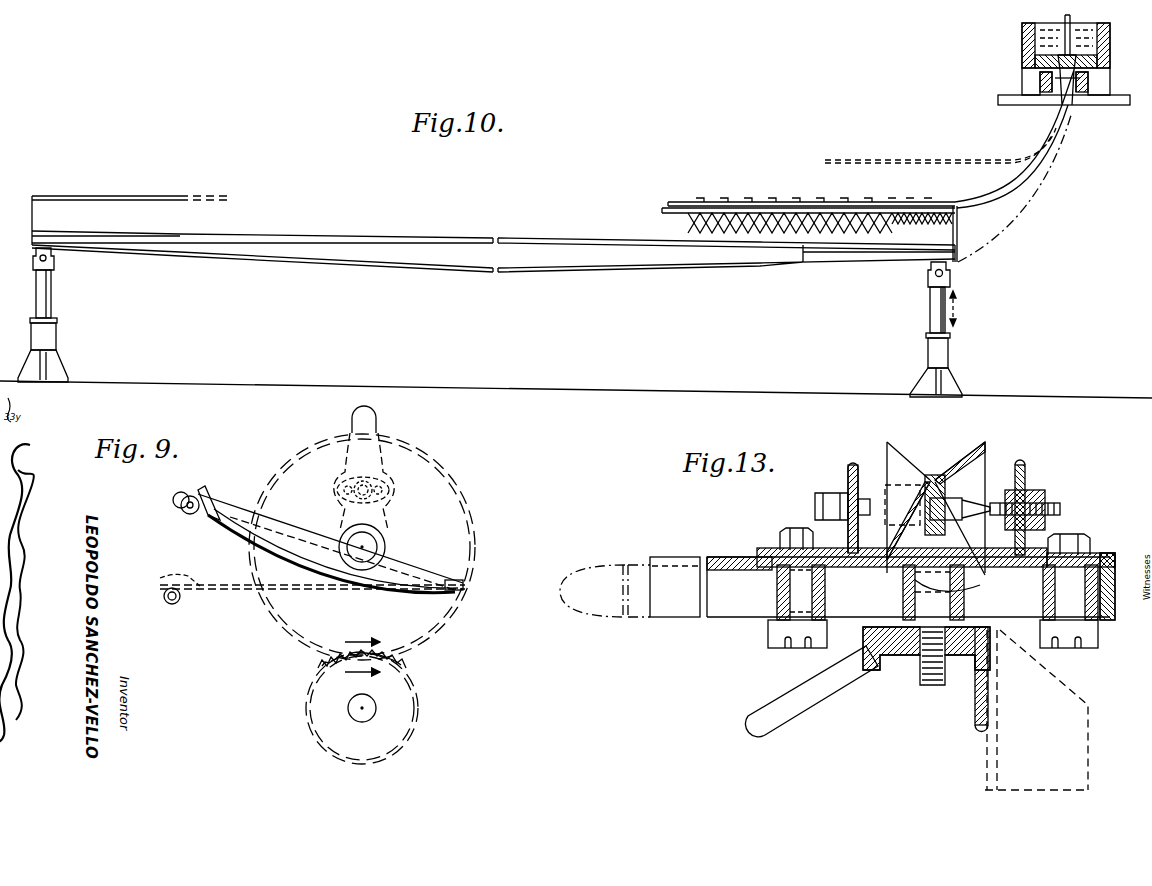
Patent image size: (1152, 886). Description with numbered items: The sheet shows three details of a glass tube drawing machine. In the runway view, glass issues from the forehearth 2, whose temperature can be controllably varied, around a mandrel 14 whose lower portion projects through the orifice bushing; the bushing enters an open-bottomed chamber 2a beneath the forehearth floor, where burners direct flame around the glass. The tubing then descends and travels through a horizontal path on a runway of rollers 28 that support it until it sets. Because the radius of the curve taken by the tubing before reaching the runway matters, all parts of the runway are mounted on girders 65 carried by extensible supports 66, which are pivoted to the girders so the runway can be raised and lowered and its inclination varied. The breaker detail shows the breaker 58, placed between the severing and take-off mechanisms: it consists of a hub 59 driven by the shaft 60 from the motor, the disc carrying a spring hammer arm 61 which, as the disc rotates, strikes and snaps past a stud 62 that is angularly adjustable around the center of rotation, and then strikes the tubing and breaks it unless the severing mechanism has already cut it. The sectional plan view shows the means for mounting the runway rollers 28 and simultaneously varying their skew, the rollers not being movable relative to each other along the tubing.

In FIG. 10, the forehearth 2 is at (1062, 64).
In FIG. 10, the mandrel 14 is at (1115, 35).
In FIG. 10, the chamber 2a is at (1073, 95).
In FIG. 10, the girders 65 is at (565, 272).
In FIG. 10, the extensible supports 66 is at (54, 288).
In FIG. 9, the breaker 58 is at (361, 533).
In FIG. 9, the hub 59 is at (418, 560).
In FIG. 9, the shaft 60 is at (372, 706).
In FIG. 9, the spring hammer arm 61 is at (272, 562).
In FIG. 9, the stud 62 is at (190, 513).
In FIG. 13, the rollers 28 is at (988, 468).